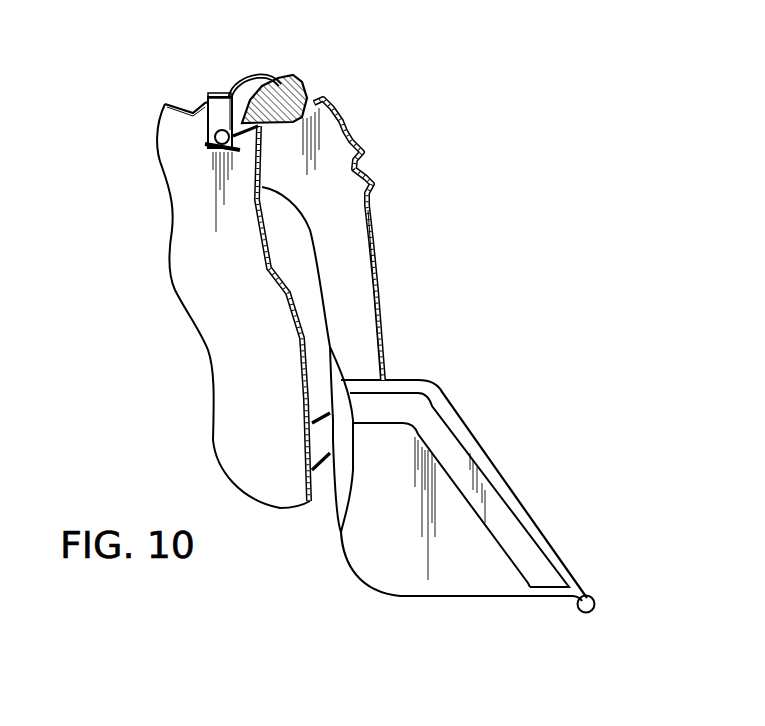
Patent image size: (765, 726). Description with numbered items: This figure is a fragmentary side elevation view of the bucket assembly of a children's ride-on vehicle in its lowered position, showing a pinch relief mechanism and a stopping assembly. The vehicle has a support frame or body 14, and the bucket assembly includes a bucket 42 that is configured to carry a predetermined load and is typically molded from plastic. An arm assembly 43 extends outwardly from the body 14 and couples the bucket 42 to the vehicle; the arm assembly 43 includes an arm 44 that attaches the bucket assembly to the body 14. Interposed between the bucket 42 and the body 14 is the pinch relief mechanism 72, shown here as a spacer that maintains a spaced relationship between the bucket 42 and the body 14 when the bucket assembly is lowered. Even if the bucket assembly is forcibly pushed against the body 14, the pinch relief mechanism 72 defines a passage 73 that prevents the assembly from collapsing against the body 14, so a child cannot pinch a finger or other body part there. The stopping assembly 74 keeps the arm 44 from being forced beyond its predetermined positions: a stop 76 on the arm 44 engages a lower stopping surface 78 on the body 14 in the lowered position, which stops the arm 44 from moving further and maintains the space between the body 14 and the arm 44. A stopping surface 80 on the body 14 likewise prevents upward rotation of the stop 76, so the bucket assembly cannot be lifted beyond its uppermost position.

The body 14 is at (200, 301).
The bucket 42 is at (483, 555).
The arm assembly 43 is at (379, 221).
The arm 44 is at (355, 280).
The pinch relief mechanism 72 is at (323, 437).
The passage 73 is at (305, 290).
The stopping assembly 74 is at (230, 69).
The stop 76 is at (305, 96).
The lower stopping surface 78 is at (241, 152).
The stopping surface 80 is at (212, 110).